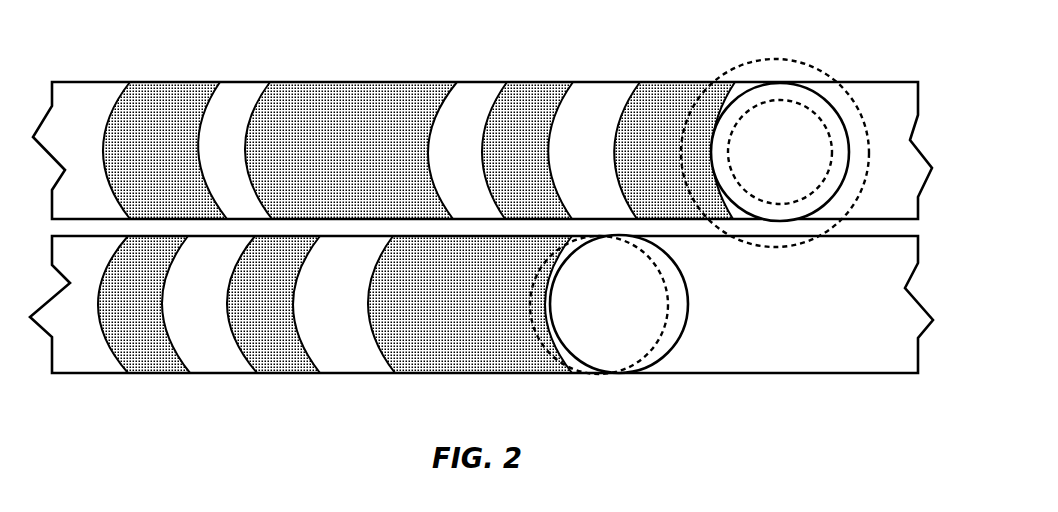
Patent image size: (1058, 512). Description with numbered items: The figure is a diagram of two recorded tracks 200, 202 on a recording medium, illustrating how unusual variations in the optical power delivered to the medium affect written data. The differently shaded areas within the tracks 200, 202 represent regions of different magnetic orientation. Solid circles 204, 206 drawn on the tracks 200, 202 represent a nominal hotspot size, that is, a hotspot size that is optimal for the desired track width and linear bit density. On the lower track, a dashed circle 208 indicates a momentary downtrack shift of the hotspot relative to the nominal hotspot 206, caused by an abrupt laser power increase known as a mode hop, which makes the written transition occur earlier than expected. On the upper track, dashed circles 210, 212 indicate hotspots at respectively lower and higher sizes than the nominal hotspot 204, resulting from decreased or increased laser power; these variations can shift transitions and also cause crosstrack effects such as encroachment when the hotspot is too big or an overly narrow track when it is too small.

The track 200 is at (98, 82).
The track 202 is at (90, 374).
The nominal hotspot circle 204 is at (780, 83).
The nominal hotspot circle 206 is at (647, 375).
The shifted hotspot dashed circle 208 is at (553, 374).
The smaller hotspot dashed circle 210 is at (792, 99).
The larger hotspot dashed circle 212 is at (730, 70).